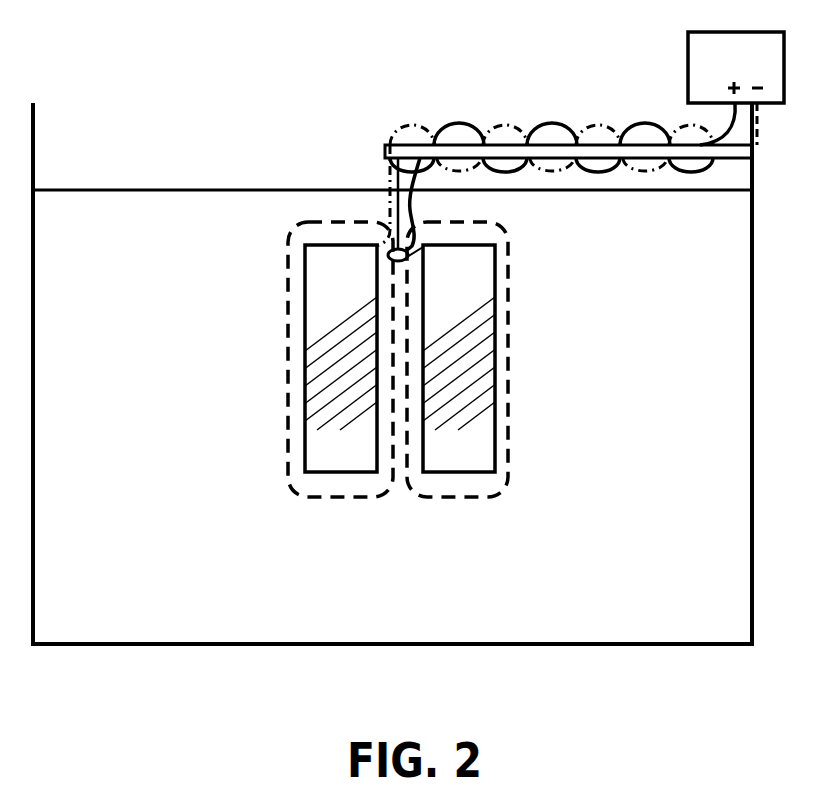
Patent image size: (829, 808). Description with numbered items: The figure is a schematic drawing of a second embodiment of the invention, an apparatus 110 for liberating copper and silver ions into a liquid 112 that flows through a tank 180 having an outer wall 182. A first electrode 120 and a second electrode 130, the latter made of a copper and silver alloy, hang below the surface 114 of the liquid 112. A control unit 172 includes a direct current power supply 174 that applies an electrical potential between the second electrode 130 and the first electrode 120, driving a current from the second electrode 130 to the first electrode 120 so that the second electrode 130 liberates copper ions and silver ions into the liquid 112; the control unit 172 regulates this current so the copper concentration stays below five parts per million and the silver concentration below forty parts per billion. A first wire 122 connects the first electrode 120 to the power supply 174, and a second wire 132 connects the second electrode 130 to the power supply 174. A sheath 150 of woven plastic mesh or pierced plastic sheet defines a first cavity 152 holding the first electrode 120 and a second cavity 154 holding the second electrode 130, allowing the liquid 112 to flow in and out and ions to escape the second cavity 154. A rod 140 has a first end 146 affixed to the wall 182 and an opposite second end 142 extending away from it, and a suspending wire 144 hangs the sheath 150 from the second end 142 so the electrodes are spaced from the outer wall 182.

The apparatus 110 is at (193, 110).
The liquid 112 is at (150, 425).
The surface 114 is at (160, 193).
The first electrode 120 is at (330, 453).
The first wire 122 is at (578, 138).
The second electrode 130 is at (428, 478).
The second wire 132 is at (487, 170).
The rod 140 is at (460, 139).
The second end 142 is at (388, 147).
The suspending wire 144 is at (394, 215).
The first end 146 is at (745, 156).
The sheath 150 is at (512, 407).
The first cavity 152 is at (288, 490).
The second cavity 154 is at (482, 486).
The control unit 172 is at (686, 44).
The direct current power supply 174 is at (716, 74).
The tank 180 is at (750, 220).
The outer wall 182 is at (752, 508).